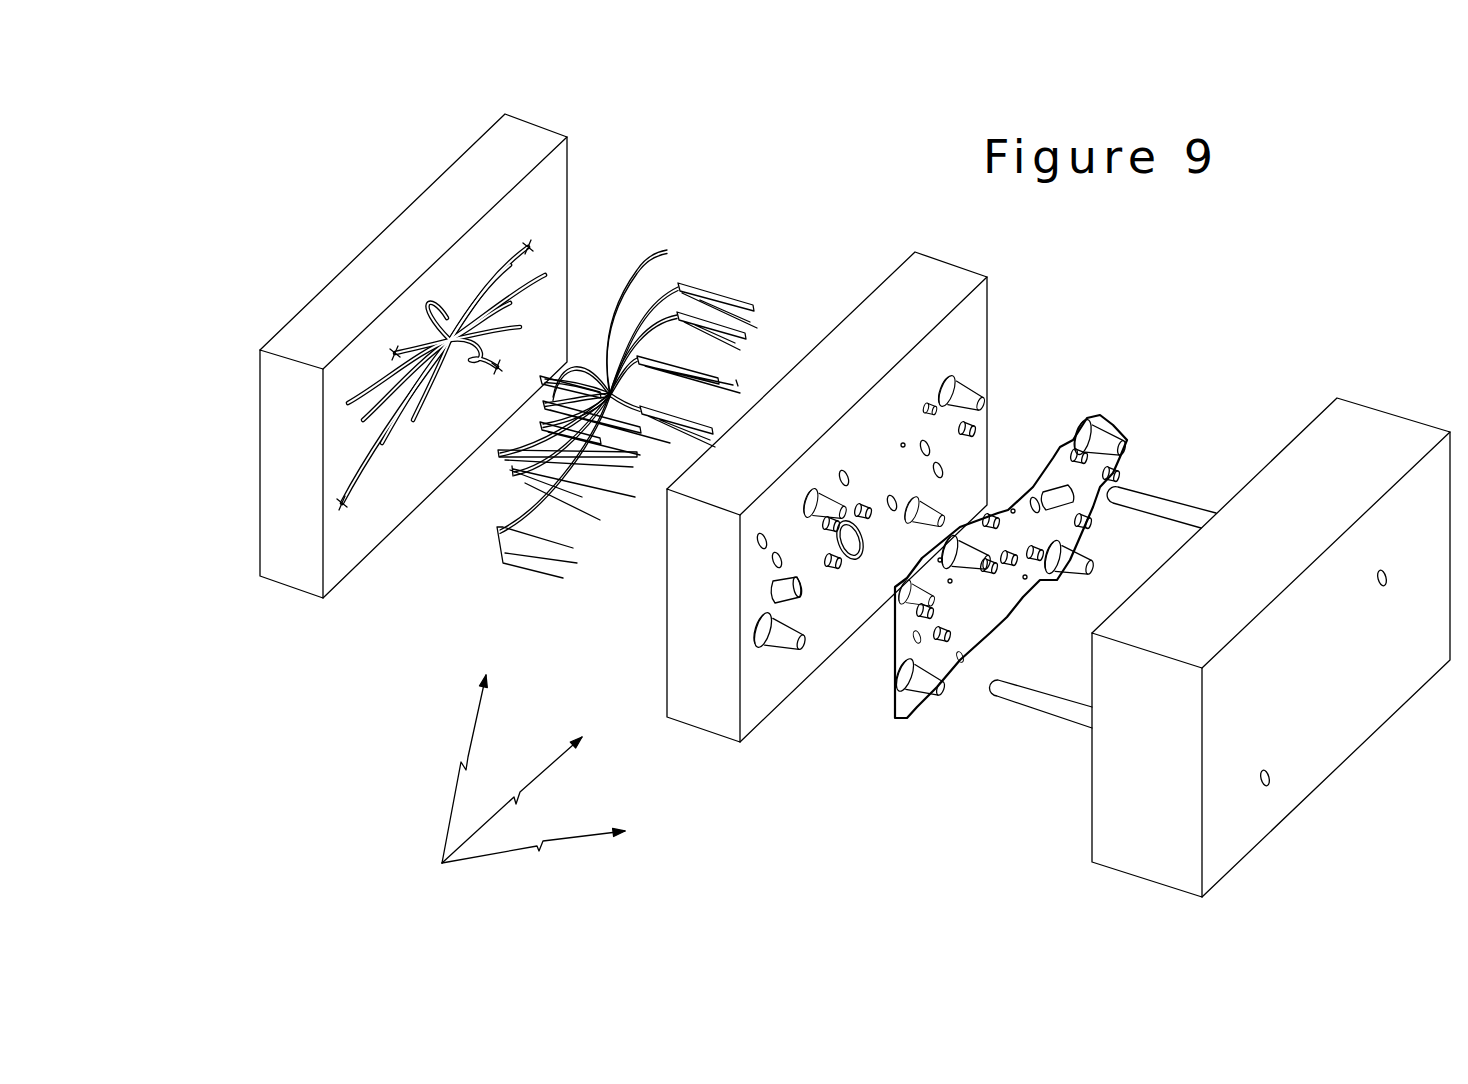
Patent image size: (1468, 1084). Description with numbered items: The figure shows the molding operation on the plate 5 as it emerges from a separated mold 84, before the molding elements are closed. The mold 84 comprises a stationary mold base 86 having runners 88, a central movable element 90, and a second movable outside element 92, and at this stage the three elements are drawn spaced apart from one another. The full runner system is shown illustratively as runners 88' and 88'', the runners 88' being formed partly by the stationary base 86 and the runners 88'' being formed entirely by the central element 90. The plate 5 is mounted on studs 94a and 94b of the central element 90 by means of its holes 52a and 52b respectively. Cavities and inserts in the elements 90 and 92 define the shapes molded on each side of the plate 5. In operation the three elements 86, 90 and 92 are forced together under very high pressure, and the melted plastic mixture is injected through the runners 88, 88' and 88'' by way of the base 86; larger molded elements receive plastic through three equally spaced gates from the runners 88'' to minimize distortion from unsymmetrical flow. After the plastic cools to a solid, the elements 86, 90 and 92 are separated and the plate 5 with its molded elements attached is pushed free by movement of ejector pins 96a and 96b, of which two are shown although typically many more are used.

The plate 5 is at (912, 700).
The hole 52a is at (913, 637).
The hole 52b is at (1122, 448).
The mold 84 is at (510, 785).
The stationary mold base 86 is at (297, 558).
The runners 88 is at (536, 300).
The runners 88' is at (642, 356).
The runners 88'' is at (691, 389).
The central movable element 90 is at (719, 716).
The second movable outside element 92 is at (1150, 857).
The stud 94a is at (770, 587).
The stud 94b is at (980, 410).
The ejector pin 96a is at (1030, 702).
The ejector pin 96b is at (1163, 512).